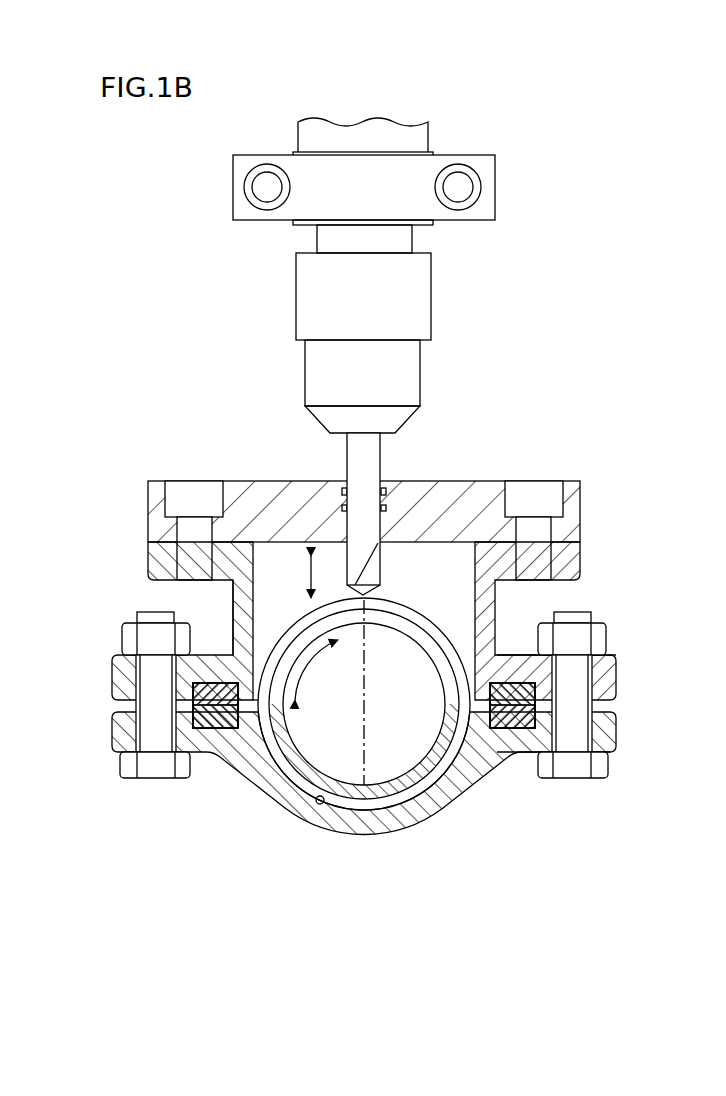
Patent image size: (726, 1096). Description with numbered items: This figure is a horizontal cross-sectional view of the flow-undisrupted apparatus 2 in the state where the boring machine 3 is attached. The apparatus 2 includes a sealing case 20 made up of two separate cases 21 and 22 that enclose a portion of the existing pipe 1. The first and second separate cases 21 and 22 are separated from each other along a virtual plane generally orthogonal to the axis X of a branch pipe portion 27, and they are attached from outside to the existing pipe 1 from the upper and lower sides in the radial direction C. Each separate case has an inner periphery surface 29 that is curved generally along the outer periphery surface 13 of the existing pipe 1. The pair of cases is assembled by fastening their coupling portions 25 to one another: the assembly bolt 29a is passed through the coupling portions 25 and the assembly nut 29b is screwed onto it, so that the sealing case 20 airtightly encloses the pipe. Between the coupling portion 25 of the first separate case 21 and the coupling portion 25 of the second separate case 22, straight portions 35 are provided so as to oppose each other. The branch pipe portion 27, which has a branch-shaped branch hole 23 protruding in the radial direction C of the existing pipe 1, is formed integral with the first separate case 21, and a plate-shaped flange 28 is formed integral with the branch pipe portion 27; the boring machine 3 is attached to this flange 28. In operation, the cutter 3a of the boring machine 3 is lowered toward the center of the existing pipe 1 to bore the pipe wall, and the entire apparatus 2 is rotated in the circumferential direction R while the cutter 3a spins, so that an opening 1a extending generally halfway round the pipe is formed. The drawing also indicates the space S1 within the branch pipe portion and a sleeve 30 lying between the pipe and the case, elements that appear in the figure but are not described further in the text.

The existing pipe 1 is at (303, 770).
The opening 1a is at (407, 632).
The present apparatus 2 is at (202, 267).
The boring machine 3 is at (415, 298).
The cutter 3a is at (380, 573).
The outer periphery surface 13 is at (430, 777).
The sealing case 20 is at (672, 638).
The first separate case 21 is at (603, 670).
The second separate case 22 is at (603, 731).
The branch hole 23 is at (493, 600).
The coupling portions 25 is at (117, 678).
The branch pipe portion 27 is at (233, 607).
The flange 28 is at (160, 548).
The inner periphery surface 29 is at (320, 800).
The assembly bolt 29a is at (130, 770).
The assembly nut 29b is at (125, 640).
The sleeve 30 is at (373, 807).
The straight portions 35 is at (225, 728).
The space S1 is at (275, 557).
The radial direction C is at (321, 577).
The circumferential direction R is at (316, 670).
The axis X is at (364, 706).